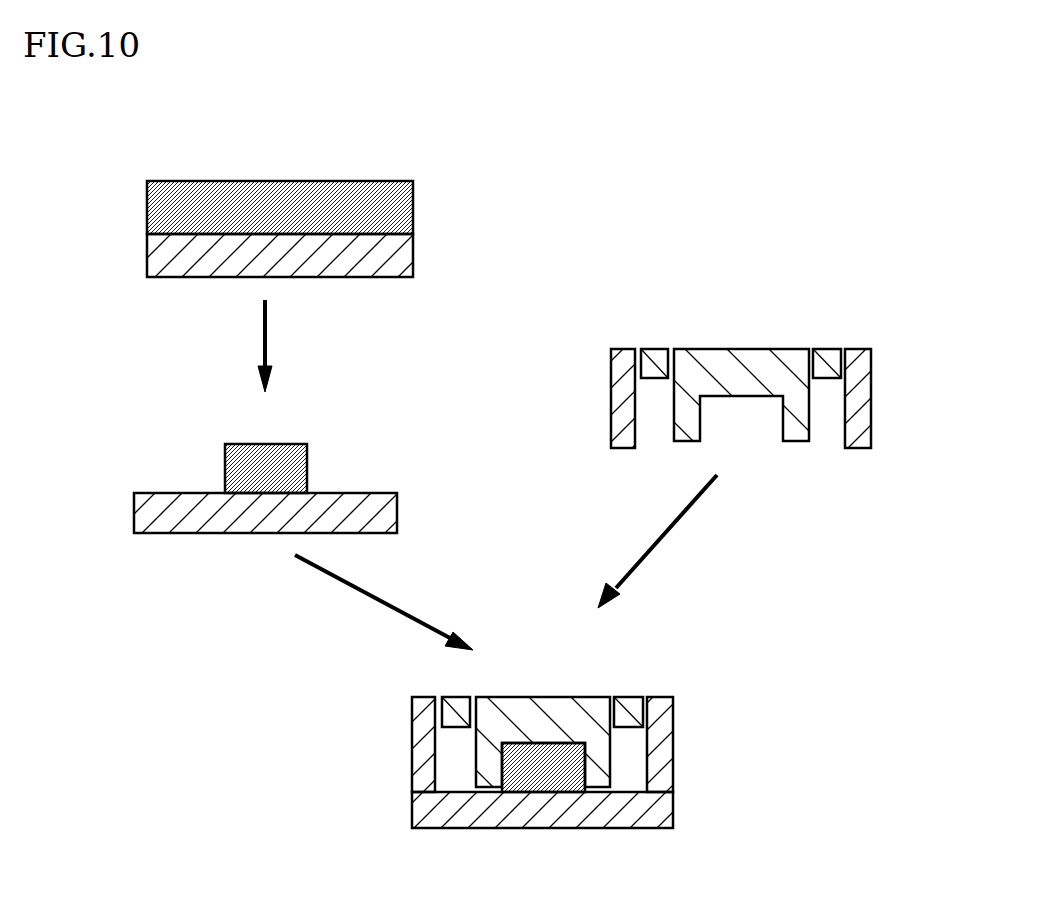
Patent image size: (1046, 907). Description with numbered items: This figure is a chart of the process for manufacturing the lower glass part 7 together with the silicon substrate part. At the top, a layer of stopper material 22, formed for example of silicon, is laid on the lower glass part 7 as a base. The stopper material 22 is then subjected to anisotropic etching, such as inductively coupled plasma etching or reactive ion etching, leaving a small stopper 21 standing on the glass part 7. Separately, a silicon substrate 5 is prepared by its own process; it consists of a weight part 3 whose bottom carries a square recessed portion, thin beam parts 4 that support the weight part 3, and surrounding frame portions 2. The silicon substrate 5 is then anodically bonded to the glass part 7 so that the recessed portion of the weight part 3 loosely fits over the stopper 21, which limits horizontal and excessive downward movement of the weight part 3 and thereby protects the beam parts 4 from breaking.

The frame part 2 is at (623, 348).
The weight part 3 is at (730, 356).
The beam parts 4 is at (652, 348).
The silicon substrate 5 is at (780, 266).
The lower glass part 7 is at (186, 277).
The stopper 21 is at (291, 452).
The stopper material 22 is at (266, 183).